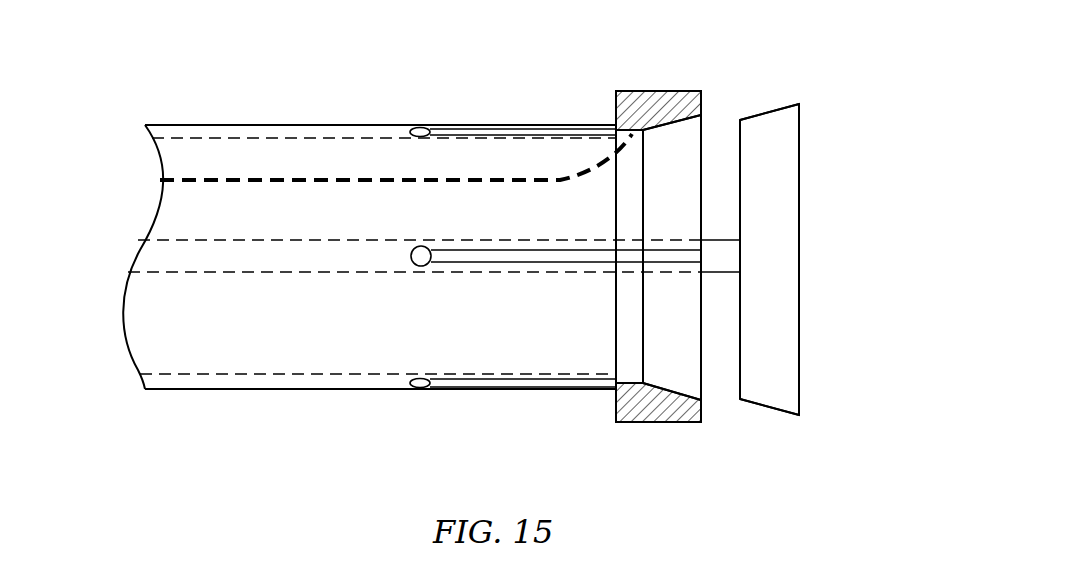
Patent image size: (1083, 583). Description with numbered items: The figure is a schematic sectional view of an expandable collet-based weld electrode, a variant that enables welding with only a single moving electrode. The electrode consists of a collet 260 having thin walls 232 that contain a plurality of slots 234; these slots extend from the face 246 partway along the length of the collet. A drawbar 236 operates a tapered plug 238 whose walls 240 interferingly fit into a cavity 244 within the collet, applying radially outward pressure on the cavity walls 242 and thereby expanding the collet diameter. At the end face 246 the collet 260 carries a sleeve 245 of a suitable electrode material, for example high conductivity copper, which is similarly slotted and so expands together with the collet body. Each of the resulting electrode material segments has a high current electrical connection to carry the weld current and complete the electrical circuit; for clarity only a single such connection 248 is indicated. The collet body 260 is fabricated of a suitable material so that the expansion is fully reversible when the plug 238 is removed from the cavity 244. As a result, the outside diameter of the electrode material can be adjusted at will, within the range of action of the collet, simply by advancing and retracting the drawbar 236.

The thin walls 232 is at (258, 390).
The slots 234 is at (411, 259).
The drawbar 236 is at (187, 273).
The tapered plug 238 is at (800, 167).
The walls of tapered plug 240 is at (766, 113).
The cavity walls 242 is at (664, 115).
The cavity 244 is at (672, 138).
The sleeve 245 is at (632, 422).
The face 246 is at (701, 408).
The high current electrical connection 248 is at (280, 177).
The collet 260 is at (381, 118).